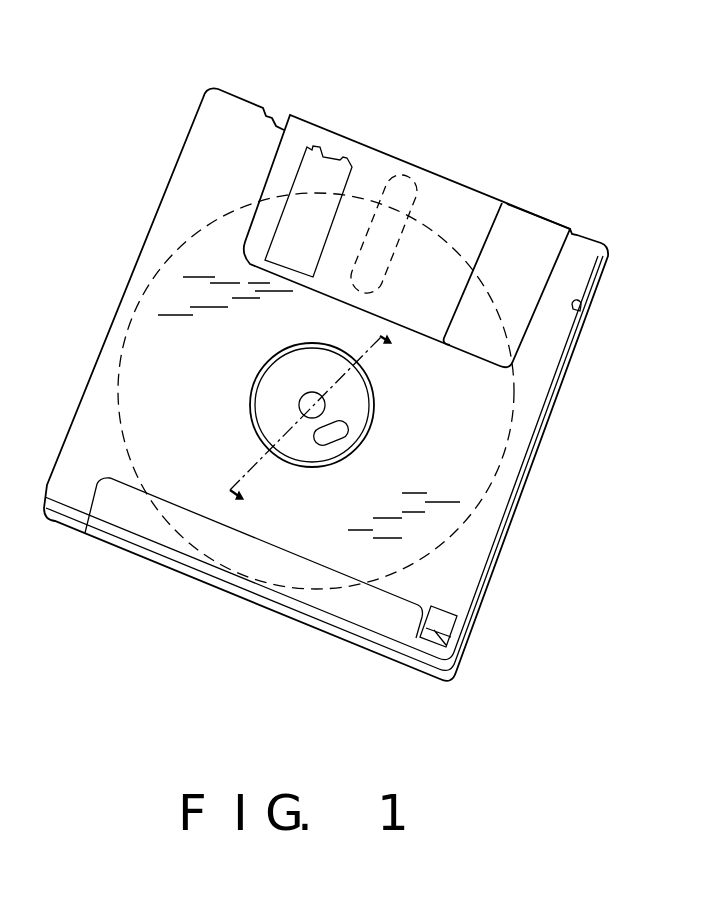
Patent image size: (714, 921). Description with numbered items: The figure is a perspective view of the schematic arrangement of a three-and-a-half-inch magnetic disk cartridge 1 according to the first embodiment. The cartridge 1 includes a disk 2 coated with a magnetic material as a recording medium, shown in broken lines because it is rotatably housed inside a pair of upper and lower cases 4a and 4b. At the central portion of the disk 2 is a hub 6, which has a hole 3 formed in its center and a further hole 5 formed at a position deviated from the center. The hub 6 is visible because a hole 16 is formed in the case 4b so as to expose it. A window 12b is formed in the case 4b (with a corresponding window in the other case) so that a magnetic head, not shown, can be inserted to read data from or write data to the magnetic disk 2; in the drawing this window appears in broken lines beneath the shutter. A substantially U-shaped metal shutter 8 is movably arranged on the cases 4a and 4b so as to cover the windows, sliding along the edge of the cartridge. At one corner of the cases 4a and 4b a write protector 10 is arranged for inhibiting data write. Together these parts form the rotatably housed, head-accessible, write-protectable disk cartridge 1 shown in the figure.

The magnetic disk cartridge 1 is at (321, 73).
The disk 2 is at (500, 393).
The hole 3 is at (373, 396).
The upper case 4a is at (473, 613).
The lower case 4b is at (500, 490).
The hole 5 is at (336, 434).
The hub 6 is at (268, 417).
The metal shutter 8 is at (411, 170).
The write protector 10 is at (453, 648).
The window 12b is at (421, 190).
The hole 16 is at (322, 467).